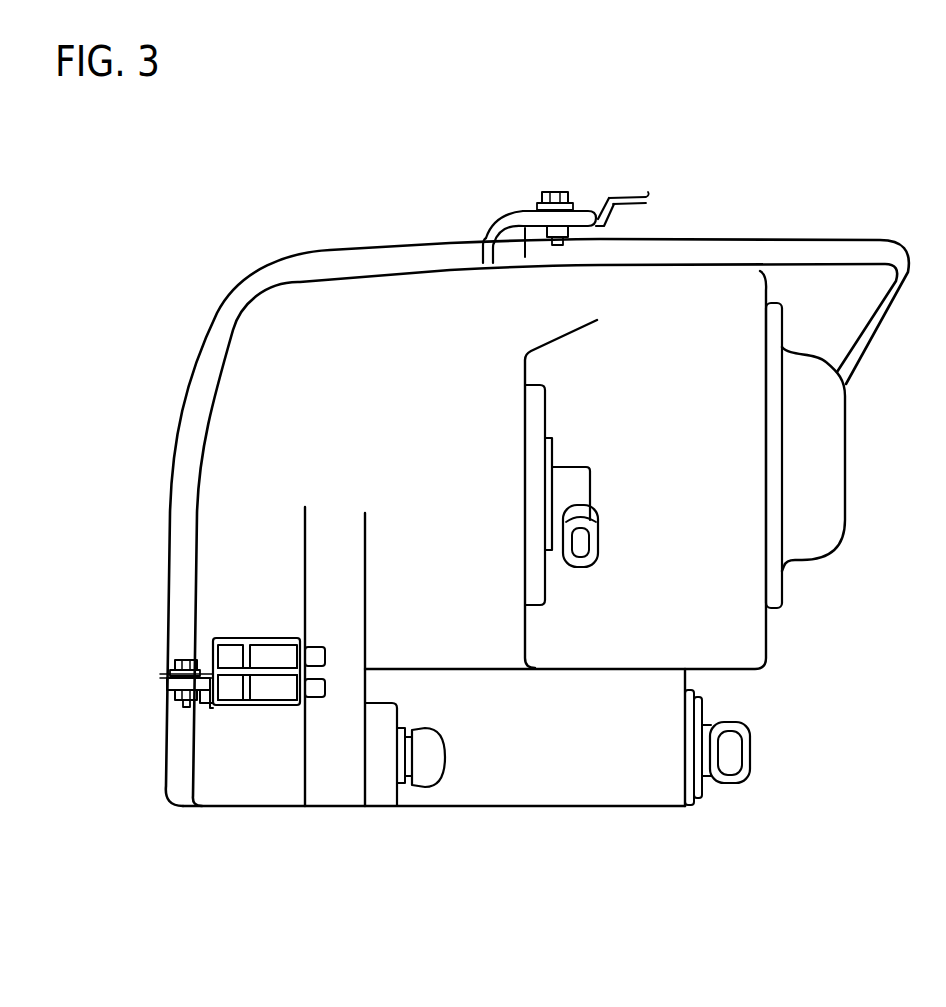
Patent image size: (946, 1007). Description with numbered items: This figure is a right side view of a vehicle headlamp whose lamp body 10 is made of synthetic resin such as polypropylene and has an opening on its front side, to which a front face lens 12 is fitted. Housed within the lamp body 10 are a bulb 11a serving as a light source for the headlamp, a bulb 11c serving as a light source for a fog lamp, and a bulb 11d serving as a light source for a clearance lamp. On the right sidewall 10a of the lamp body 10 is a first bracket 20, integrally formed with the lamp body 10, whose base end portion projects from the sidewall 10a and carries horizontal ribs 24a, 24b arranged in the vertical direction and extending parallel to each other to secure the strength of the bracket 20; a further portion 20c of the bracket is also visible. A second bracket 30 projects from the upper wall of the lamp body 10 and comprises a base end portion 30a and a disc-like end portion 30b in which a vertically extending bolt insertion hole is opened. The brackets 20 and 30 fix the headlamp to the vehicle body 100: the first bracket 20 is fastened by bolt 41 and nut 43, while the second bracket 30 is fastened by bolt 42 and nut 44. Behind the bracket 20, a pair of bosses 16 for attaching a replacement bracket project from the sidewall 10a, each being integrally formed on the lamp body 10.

The lamp body 10 is at (288, 327).
The right sidewall 10a is at (230, 498).
The front face lens 12 is at (194, 383).
The bosses 16 is at (322, 698).
The first bracket 20 is at (207, 712).
The bracket bottom flange 20c is at (272, 705).
The horizontal rib 24a is at (285, 638).
The horizontal rib 24b is at (265, 658).
The second bracket 30 is at (522, 204).
The base end portion 30a is at (500, 212).
The disc-like end portion 30b is at (590, 207).
The bolt 41 is at (177, 662).
The bolt 42 is at (552, 192).
The nut 43 is at (172, 694).
The nut 44 is at (485, 238).
The vehicle body 100 is at (156, 675).
The bulb 11a is at (586, 540).
The bulb 11c is at (735, 750).
The bulb 11d is at (428, 782).